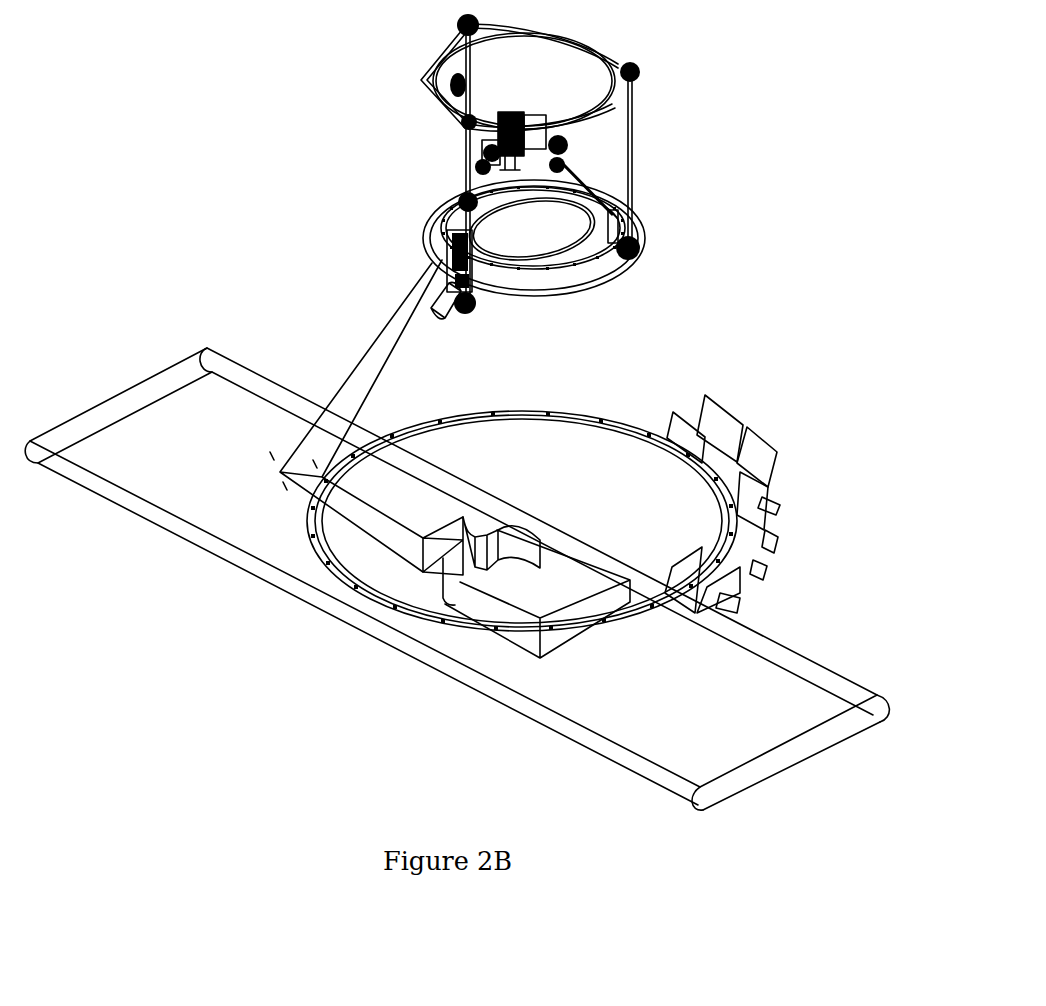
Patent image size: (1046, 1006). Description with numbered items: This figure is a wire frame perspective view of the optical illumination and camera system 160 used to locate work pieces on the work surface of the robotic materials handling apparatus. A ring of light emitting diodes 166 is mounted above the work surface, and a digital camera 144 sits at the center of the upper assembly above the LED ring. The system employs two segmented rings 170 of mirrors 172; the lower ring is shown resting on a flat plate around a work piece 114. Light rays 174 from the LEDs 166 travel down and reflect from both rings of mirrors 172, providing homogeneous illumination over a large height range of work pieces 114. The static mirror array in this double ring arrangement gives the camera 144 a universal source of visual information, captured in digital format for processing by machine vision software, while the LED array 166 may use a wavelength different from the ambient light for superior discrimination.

The work piece 114 is at (465, 595).
The digital camera 144 is at (535, 108).
The optical illumination and camera system 160 is at (437, 180).
The ring of light emitting diodes 166 is at (555, 275).
The segmented ring 170 is at (738, 376).
The mirror 172 is at (663, 423).
The light ray 174 is at (380, 358).